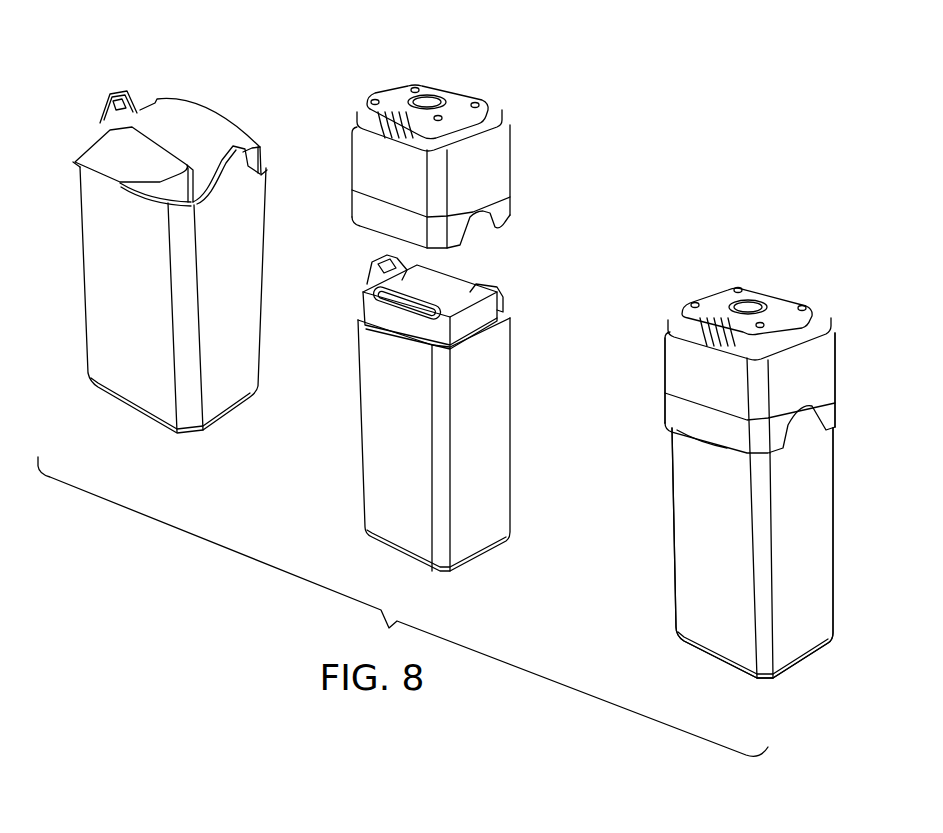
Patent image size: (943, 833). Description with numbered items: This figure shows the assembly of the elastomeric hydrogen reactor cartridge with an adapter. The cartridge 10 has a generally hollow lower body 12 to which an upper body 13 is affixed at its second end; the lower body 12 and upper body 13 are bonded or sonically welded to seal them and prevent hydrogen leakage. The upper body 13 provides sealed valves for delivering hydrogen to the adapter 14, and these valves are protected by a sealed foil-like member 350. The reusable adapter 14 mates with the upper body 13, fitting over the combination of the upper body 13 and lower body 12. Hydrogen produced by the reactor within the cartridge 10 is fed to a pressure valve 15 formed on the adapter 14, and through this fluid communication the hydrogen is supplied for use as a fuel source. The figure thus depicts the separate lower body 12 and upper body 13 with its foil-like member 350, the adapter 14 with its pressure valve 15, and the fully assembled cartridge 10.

The cartridge 10 is at (712, 226).
The lower body 12 is at (128, 258).
The upper body 13 is at (188, 125).
The adapter 14 is at (387, 173).
The pressure valve 15 is at (424, 98).
The sealed foil-like member 350 is at (118, 157).